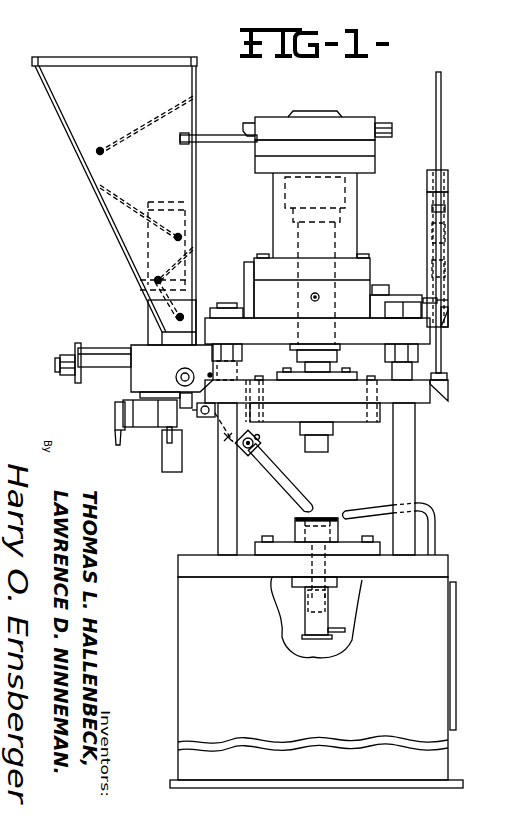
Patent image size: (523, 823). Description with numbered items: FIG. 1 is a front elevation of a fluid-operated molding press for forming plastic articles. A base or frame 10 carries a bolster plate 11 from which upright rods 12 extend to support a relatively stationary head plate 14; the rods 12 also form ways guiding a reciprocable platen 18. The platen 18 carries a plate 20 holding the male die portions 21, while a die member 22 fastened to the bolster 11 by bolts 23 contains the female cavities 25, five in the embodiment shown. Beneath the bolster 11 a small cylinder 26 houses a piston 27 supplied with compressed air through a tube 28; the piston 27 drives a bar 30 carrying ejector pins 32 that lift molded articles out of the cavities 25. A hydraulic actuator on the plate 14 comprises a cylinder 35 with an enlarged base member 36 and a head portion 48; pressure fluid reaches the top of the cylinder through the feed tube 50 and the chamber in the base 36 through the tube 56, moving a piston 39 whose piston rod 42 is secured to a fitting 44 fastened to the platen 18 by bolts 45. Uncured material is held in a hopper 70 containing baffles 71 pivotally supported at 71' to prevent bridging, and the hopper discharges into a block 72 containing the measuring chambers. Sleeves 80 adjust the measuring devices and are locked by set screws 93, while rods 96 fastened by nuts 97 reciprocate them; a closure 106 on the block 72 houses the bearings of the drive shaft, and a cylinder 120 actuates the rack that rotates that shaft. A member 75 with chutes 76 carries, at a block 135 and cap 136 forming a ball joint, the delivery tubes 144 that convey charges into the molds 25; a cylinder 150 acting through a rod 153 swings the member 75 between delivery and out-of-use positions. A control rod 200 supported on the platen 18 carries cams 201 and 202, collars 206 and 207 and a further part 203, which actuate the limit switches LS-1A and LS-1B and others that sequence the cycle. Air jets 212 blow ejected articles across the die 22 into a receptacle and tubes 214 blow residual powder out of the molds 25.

The base or frame 10 is at (440, 630).
The bolster or mold supporting plate 11 is at (450, 557).
The upright struts or rods 12 is at (218, 495).
The head or relatively stationary plate 14 is at (283, 336).
The reciprocable platen or ram 18 is at (420, 400).
The plate 20 is at (347, 420).
The male portions of the molding dies 21 is at (325, 449).
The die member 22 is at (293, 532).
The bolts 23 is at (272, 537).
The female portions or cavities 25 is at (295, 523).
The cylinder 26 is at (323, 622).
The piston 27 is at (305, 622).
The tube 28 is at (343, 640).
The bar 30 is at (314, 564).
The article ejector pins 32 is at (322, 543).
The cylinder 35 is at (378, 165).
The enlarged base member 36 is at (363, 283).
The piston member 39 is at (343, 190).
The piston rod 42 is at (335, 238).
The fitting 44 is at (330, 376).
The bolts 45 is at (288, 370).
The head portion 48 is at (352, 122).
The feed pipe or tube 50 is at (247, 124).
The tube 56 is at (253, 292).
The hopper 70 is at (192, 88).
The baffles 71 is at (163, 207).
The pivotal supports 71' is at (136, 233).
The block 72 is at (143, 343).
The member 75 is at (237, 448).
The chutes or compartments 76 is at (220, 452).
The sleeves 80 is at (90, 352).
The set screws 93 is at (75, 346).
The shafts or rods 96 is at (108, 377).
The nuts 97 is at (72, 374).
The closure 106 is at (176, 378).
The cylinder 120 is at (153, 240).
The boss portion or block 135 is at (262, 432).
The cap member 136 is at (257, 443).
The material delivery tube 144 is at (287, 472).
The cylinder 150 is at (135, 425).
The rod 153 is at (206, 423).
The control rod 200 is at (441, 118).
The cam 201 is at (445, 230).
The cam member 202 is at (445, 265).
The switch actuator block 203 is at (446, 316).
The control collar 206 is at (446, 206).
The cam or collar 207 is at (437, 301).
The air jets 212 is at (386, 507).
The tubes 214 is at (348, 538).
The cam operated limit switch LS-1A is at (414, 290).
The limit switch LS-1B is at (480, 291).